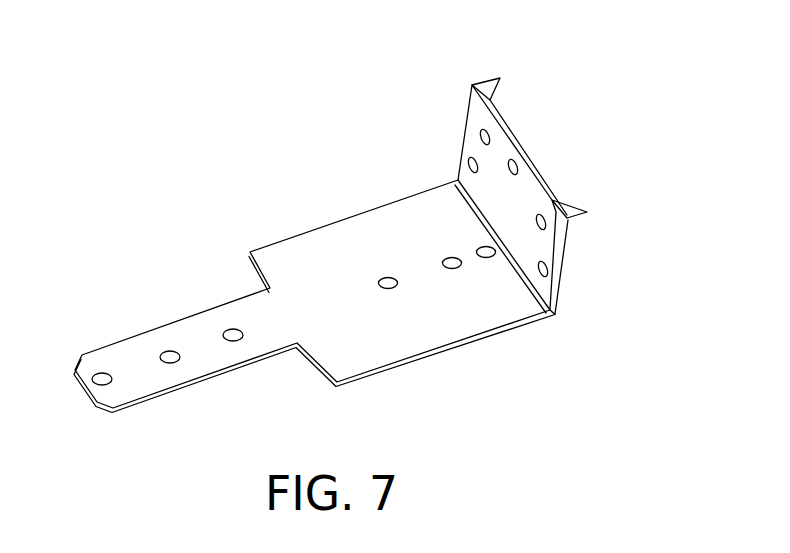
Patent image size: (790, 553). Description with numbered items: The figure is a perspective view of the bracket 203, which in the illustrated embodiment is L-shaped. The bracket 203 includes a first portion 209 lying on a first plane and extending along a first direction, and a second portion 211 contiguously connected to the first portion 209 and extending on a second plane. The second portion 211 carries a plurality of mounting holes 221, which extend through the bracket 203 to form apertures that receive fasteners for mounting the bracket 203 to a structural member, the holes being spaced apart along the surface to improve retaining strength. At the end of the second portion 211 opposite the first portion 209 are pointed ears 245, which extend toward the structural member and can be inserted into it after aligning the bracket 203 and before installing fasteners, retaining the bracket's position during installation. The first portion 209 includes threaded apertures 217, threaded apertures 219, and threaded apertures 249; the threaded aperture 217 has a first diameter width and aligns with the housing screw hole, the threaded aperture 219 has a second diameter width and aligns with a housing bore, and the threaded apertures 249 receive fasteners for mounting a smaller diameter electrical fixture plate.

The bracket 203 is at (373, 214).
The first portion 209 is at (305, 231).
The second portion 211 is at (572, 165).
The threaded aperture 217 is at (225, 331).
The threaded aperture 219 is at (100, 373).
The mounting hole 221 is at (514, 160).
The pointed ear 245 is at (498, 78).
The threaded aperture 249 is at (169, 352).